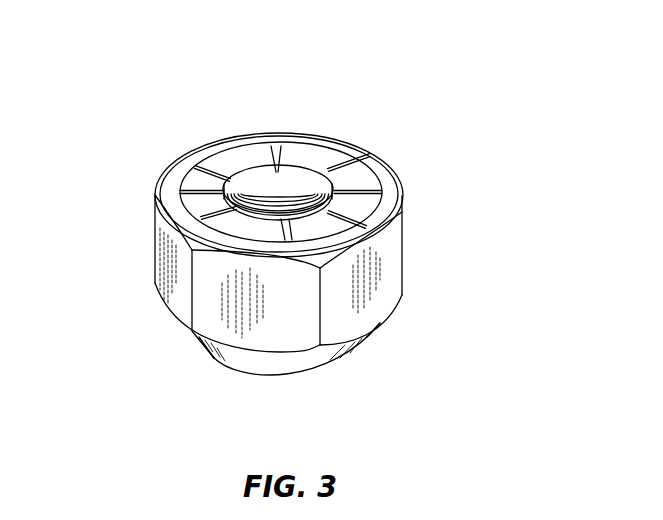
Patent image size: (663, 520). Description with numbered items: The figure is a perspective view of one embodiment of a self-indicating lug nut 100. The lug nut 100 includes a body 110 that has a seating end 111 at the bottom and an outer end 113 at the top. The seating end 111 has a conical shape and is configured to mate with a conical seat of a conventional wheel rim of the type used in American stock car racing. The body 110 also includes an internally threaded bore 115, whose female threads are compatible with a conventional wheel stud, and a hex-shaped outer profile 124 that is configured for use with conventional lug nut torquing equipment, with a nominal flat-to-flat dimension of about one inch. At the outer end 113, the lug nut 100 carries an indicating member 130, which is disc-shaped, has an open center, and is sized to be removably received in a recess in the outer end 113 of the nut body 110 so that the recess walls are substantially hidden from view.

The self-indicating lug nut 100 is at (462, 76).
The body 110 is at (403, 250).
The seating end 111 is at (213, 357).
The outer end 113 is at (175, 198).
The internally threaded bore 115 is at (270, 198).
The hex-shaped outer profile 124 is at (167, 265).
The indicating member 130 is at (232, 158).